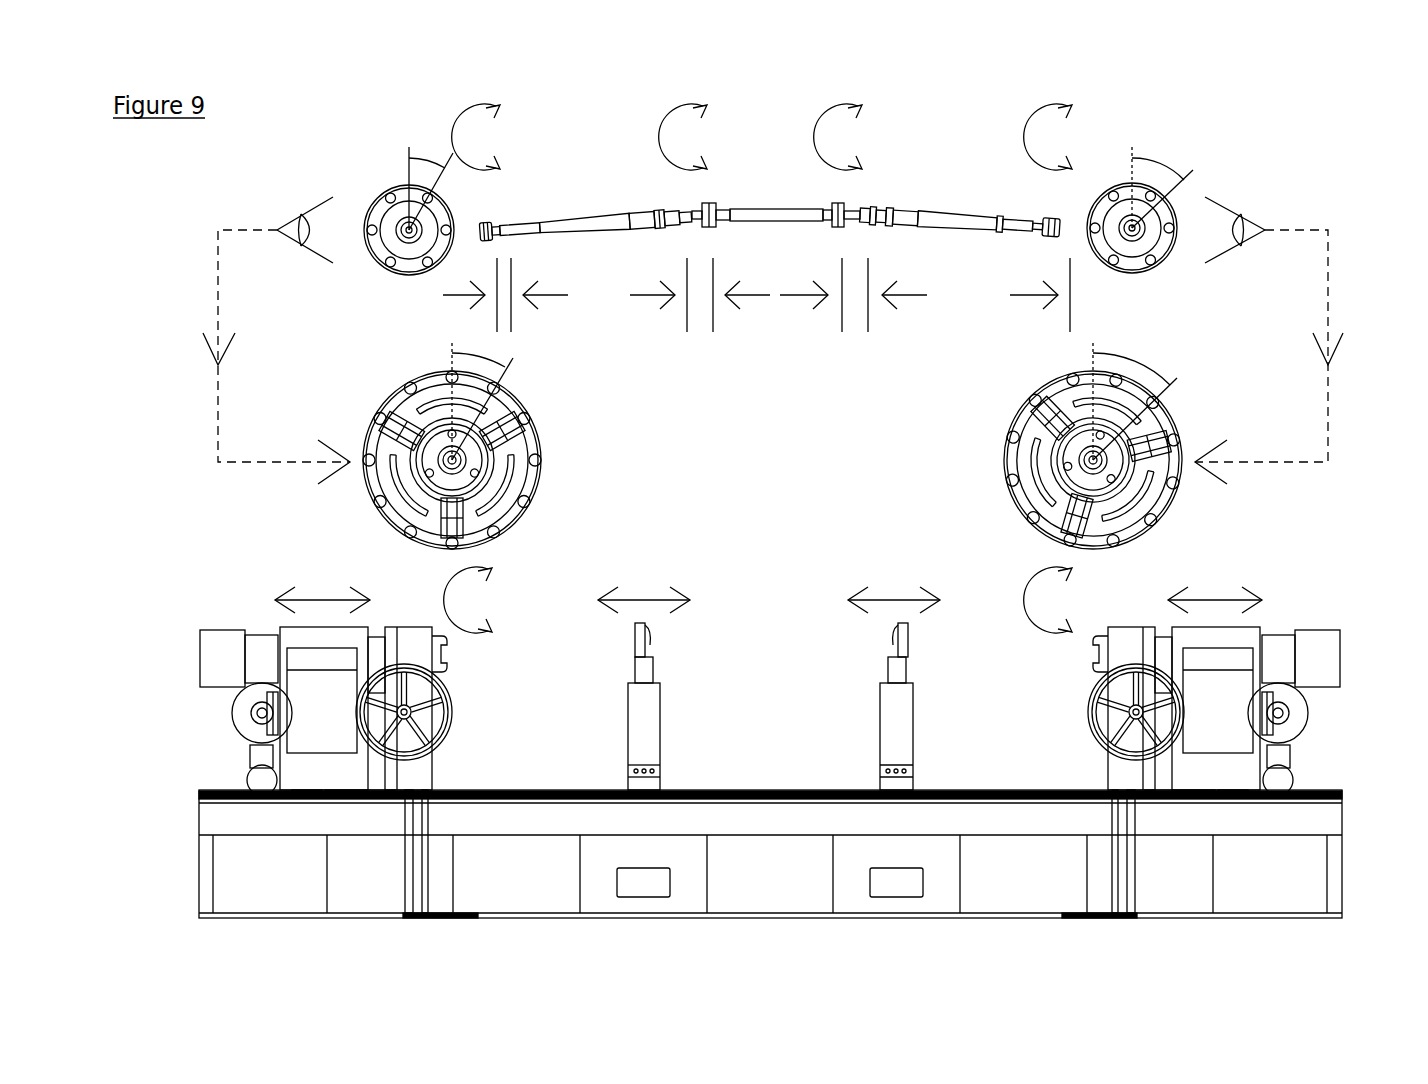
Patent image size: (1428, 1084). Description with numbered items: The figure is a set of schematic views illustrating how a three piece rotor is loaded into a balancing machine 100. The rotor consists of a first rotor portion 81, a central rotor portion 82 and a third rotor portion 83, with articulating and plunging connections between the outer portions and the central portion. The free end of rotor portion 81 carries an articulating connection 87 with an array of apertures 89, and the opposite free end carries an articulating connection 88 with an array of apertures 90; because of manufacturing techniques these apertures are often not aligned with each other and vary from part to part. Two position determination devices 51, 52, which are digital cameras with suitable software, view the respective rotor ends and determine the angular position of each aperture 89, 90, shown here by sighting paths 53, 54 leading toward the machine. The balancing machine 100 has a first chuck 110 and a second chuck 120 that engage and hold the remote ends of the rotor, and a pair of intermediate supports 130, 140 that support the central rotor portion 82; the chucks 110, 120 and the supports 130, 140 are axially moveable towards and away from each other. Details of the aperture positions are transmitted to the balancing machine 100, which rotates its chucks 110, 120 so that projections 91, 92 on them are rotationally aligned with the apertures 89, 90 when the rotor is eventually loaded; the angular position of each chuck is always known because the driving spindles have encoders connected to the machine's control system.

The position determination device 51 is at (287, 213).
The position determination device 52 is at (1250, 212).
The first view path 53 is at (212, 405).
The second view path 54 is at (1332, 405).
The rotor portion 81 is at (585, 212).
The central rotor portion 82 is at (773, 209).
The rotor portion 83 is at (951, 210).
The articulating connection 87 is at (407, 199).
The articulating connection 88 is at (1181, 202).
The apertures 89 is at (432, 201).
The apertures 90 is at (1143, 222).
The projection 91 is at (458, 453).
The projection 92 is at (1100, 455).
The balancing machine 100 is at (995, 815).
The first mounting apparatus or chuck 110 is at (421, 567).
The second mounting apparatus or chuck 120 is at (1122, 567).
The intermediate support 130 is at (657, 725).
The intermediate support 140 is at (884, 720).